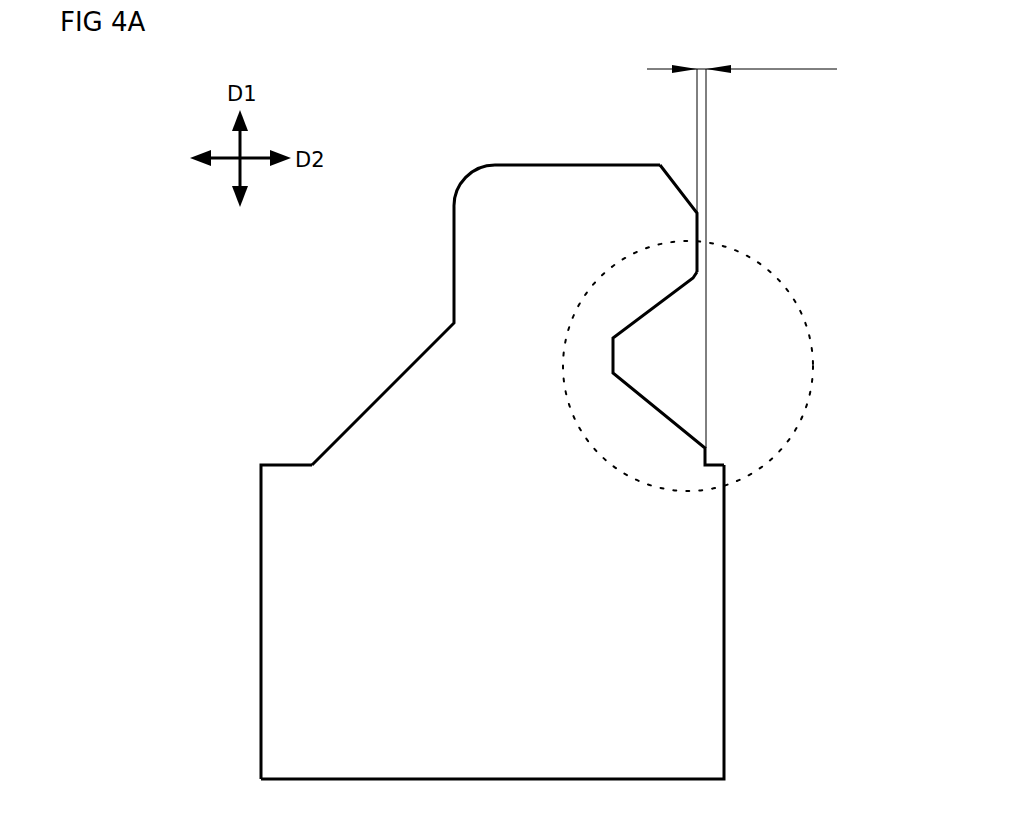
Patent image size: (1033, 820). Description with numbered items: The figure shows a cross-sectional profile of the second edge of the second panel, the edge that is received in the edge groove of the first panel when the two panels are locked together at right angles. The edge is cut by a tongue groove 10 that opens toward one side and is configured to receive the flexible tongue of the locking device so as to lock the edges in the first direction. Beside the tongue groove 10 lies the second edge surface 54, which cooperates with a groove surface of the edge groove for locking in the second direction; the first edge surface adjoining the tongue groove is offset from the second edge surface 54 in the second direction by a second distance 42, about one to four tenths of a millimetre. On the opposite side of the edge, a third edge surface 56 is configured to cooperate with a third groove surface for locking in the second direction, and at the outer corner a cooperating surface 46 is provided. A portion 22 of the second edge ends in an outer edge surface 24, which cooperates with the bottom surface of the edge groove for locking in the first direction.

The tongue groove 10 is at (657, 362).
The portion of the second edge 22 is at (565, 223).
The outer edge surface 24 is at (525, 165).
The second distance 42 is at (742, 245).
The cooperating surface 46 is at (277, 465).
The second edge surface 54 is at (697, 230).
The third edge surface 56 is at (454, 243).